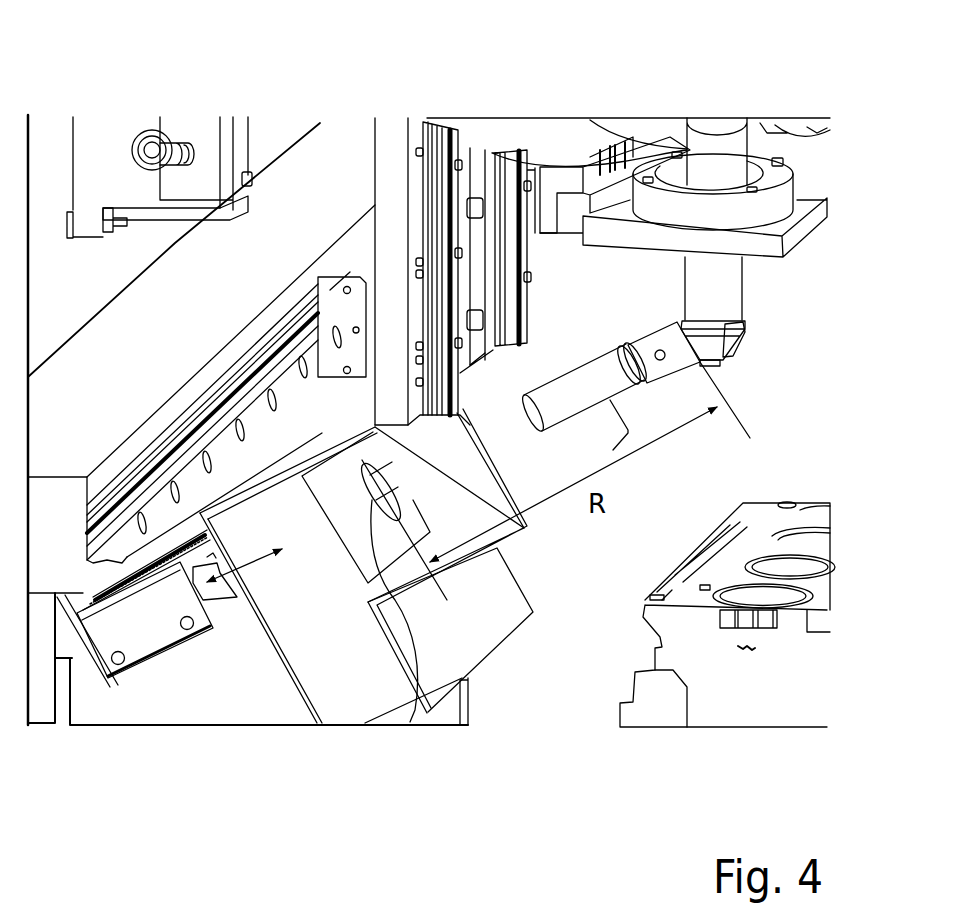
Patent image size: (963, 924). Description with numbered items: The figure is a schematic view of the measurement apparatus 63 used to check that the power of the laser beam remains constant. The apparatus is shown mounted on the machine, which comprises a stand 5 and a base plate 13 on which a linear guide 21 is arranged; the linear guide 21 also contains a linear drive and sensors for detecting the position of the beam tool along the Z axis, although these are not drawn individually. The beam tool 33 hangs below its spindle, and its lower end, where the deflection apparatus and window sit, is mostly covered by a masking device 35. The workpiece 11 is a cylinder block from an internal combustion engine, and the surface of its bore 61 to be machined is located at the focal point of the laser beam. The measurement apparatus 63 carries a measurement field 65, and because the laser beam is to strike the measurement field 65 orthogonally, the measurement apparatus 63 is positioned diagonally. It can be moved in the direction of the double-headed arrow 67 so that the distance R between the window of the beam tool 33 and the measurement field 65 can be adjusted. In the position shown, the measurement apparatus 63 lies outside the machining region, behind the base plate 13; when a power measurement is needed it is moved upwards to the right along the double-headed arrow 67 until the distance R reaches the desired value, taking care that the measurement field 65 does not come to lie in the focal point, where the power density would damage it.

The stand 5 is at (38, 662).
The workpiece 11 is at (773, 670).
The base plate 13 is at (390, 173).
The linear guide 21 is at (443, 145).
The beam tool 33 is at (827, 125).
The masking device 35 is at (790, 123).
The bore 61 is at (793, 567).
The measurement apparatus 63 is at (308, 600).
The measurement field 65 is at (425, 700).
The double-headed arrow 67 is at (300, 630).